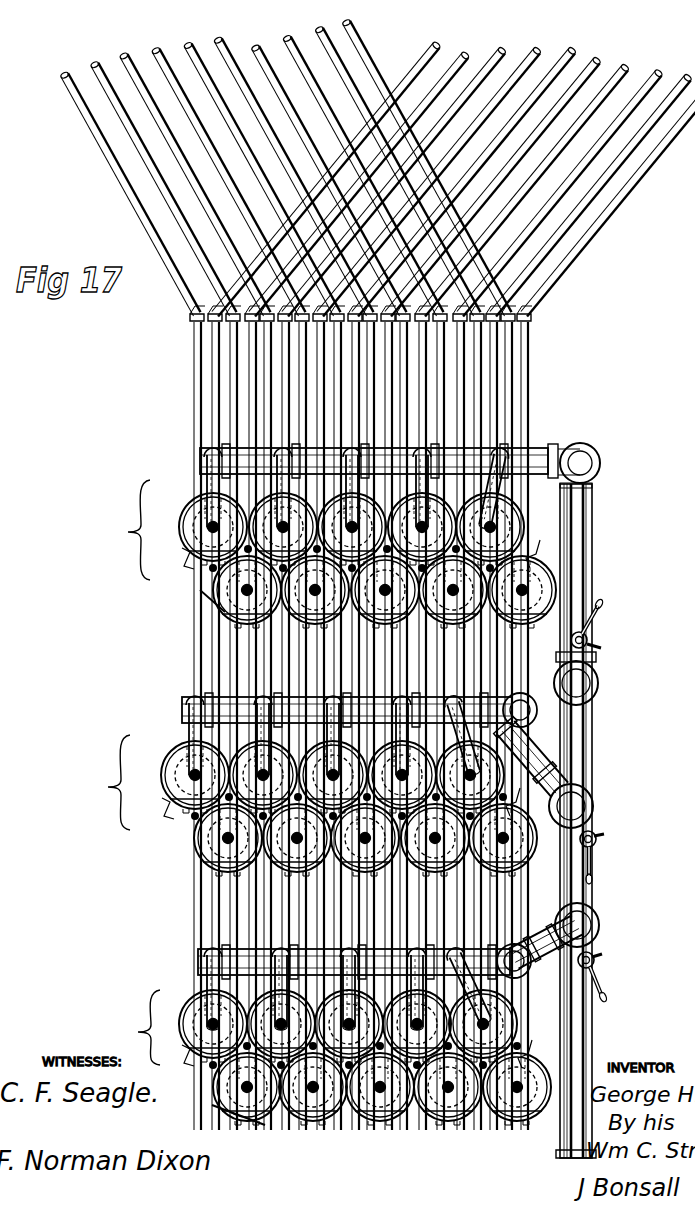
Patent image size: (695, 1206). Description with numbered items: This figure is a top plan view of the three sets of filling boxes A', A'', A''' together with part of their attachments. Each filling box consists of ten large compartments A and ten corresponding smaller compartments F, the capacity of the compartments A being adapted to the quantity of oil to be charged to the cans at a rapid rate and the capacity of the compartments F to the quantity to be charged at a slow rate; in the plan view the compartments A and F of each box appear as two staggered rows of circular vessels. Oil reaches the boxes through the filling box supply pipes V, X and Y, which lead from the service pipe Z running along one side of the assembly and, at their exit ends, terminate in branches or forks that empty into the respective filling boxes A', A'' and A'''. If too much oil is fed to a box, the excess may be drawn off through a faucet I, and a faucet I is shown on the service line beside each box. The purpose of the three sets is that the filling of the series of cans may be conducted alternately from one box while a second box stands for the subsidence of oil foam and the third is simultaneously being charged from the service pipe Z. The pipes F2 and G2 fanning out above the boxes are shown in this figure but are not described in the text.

The air pipes (left set) F2 is at (62, 72).
The air pipes (right set) G2 is at (436, 46).
The filling box supply pipe Y is at (542, 450).
The service pipe Z is at (590, 748).
The filling box supply pipe X is at (598, 928).
The faucet I is at (594, 641).
The filling box supply pipe V is at (186, 736).
The filling box A''' is at (319, 512).
The filling box A' is at (289, 761).
The filling box A'' is at (323, 1004).
The compartment A is at (340, 816).
The smaller compartment F is at (194, 566).